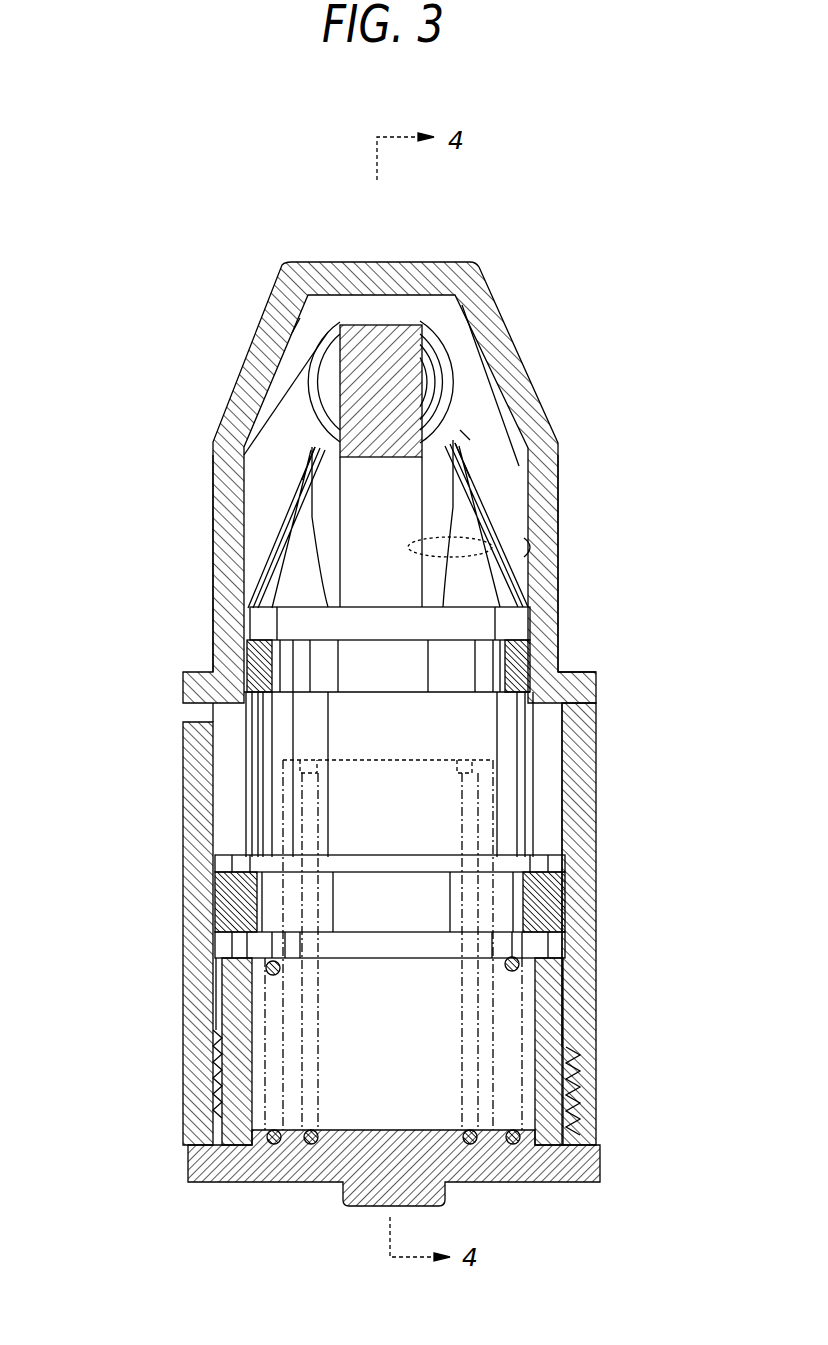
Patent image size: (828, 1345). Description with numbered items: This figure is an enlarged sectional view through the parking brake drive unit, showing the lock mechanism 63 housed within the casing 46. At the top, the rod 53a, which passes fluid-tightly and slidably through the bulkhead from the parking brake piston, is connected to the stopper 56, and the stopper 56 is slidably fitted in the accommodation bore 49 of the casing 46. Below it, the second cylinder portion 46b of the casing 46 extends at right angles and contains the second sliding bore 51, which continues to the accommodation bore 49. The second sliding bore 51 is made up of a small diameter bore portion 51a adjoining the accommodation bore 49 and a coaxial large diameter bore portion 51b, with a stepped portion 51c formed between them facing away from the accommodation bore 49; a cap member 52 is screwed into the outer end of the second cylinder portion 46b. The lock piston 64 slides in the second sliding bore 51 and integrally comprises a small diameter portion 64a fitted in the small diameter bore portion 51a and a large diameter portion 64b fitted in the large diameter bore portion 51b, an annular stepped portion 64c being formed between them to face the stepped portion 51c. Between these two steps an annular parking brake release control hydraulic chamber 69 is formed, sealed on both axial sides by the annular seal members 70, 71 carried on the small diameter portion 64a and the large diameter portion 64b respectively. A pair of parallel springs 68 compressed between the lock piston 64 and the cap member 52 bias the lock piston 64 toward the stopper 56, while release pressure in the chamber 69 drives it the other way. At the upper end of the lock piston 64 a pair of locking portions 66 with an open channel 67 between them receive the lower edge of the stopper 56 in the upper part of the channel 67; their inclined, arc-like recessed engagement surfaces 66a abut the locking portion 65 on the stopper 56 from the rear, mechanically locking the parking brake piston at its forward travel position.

The casing 46 is at (208, 462).
The second cylinder portion 46b is at (214, 556).
The accommodation bore 49 is at (305, 352).
The second sliding bore 51 is at (238, 808).
The small diameter bore portion 51a is at (558, 562).
The large diameter bore portion 51b is at (550, 850).
The stepped portion 51c is at (567, 713).
The cap member 52 is at (207, 1160).
The rod 53a is at (383, 385).
The stopper 56 is at (373, 333).
The lock mechanism 63 is at (460, 424).
The lock piston 64 is at (222, 950).
The small diameter portion 64a is at (275, 625).
The large diameter portion 64b is at (548, 940).
The annular stepped portion 64c is at (232, 855).
The locking portion 65 is at (333, 342).
The locking portion 66 is at (295, 558).
The engagement surface 66a is at (327, 487).
The open channel 67 is at (523, 540).
The spring 68 is at (309, 1130).
The parking brake release control hydraulic chamber 69 is at (552, 763).
The annular seal member 70 is at (540, 660).
The annular seal member 71 is at (213, 903).